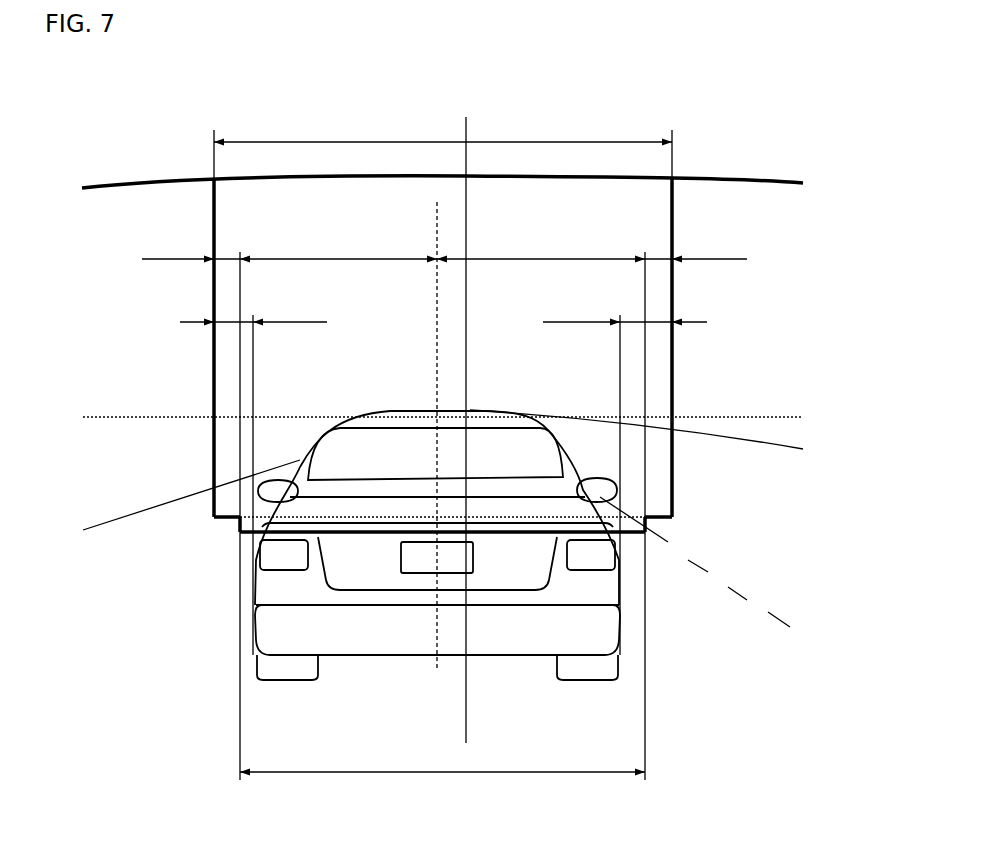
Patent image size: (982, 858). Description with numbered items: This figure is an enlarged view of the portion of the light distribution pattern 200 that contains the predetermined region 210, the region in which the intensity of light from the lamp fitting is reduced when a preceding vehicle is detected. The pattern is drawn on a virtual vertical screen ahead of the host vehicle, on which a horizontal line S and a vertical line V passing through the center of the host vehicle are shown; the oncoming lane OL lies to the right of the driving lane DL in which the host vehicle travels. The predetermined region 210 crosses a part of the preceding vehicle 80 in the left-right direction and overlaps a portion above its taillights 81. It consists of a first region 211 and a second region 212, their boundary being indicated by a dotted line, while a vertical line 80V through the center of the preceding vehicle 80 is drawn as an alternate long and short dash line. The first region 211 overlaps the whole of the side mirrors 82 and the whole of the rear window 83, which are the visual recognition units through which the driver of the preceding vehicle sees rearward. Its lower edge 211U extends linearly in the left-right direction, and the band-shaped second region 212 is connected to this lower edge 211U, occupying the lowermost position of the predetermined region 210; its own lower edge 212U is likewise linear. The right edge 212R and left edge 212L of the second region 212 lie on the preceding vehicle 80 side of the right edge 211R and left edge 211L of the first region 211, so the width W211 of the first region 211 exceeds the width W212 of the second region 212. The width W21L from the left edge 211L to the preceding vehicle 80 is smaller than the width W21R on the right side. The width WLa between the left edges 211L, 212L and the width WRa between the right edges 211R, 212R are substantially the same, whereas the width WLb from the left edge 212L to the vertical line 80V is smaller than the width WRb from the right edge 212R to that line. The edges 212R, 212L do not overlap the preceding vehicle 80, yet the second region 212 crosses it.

The light distribution pattern 200 is at (110, 124).
The predetermined region 210 is at (419, 441).
The first region 211 is at (419, 369).
The left edge of the first region 211L is at (214, 478).
The right edge of the first region 211R is at (675, 493).
The lower edge of the first region 211U is at (217, 522).
The second region 212 is at (464, 611).
The left edge of the second region 212L is at (235, 530).
The right edge of the second region 212R is at (652, 533).
The lower edge of the second region 212U is at (368, 537).
The preceding vehicle 80 is at (437, 530).
The vertical line 80V is at (437, 217).
The taillights 81 is at (287, 557).
The side mirrors 82 is at (270, 492).
The rear window 83 is at (413, 442).
The vertical line V is at (466, 417).
The horizontal line S is at (817, 418).
The driving lane DL is at (157, 533).
The oncoming lane OL is at (780, 470).
The width of the first region W211 is at (443, 133).
The width of the second region W212 is at (442, 788).
The width from the left edge of the first region to the preceding vehicle W21L is at (253, 476).
The width from the right edge of the first region to the preceding vehicle W21R is at (625, 476).
The width from the left edge of the first region to the left edge of the second regi WLa is at (196, 248).
The width from the left edge of the second region to the vertical line WLb is at (338, 248).
The width from the right edge of the first region to the right edge of the second re WRa is at (696, 248).
The width from the right edge of the second region to the vertical line WRb is at (541, 248).